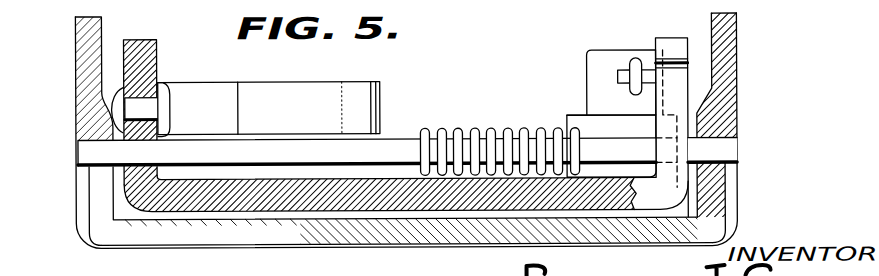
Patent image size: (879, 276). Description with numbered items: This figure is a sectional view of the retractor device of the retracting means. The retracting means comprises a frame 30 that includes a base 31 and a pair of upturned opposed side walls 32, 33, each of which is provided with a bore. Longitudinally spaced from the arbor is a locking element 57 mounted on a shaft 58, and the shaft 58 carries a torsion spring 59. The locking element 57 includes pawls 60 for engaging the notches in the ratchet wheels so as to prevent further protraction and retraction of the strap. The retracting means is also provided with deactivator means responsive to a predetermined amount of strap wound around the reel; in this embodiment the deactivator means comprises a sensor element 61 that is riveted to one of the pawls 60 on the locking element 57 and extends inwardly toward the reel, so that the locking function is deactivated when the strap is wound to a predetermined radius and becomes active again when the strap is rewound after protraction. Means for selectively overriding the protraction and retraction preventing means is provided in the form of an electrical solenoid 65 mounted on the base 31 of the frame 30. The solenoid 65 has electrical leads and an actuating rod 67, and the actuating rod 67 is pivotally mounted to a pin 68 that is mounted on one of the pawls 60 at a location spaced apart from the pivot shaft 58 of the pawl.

The frame 30 is at (742, 96).
The base 31 is at (478, 236).
The side wall 32 is at (88, 53).
The side wall 33 is at (729, 35).
The locking element 57 is at (321, 212).
The shaft 58 is at (374, 155).
The torsion spring 59 is at (488, 136).
The pawls 60 is at (146, 55).
The sensor element 61 is at (285, 107).
The electrical solenoid 65 is at (594, 62).
The actuating rod 67 is at (636, 60).
The pin 68 is at (618, 79).